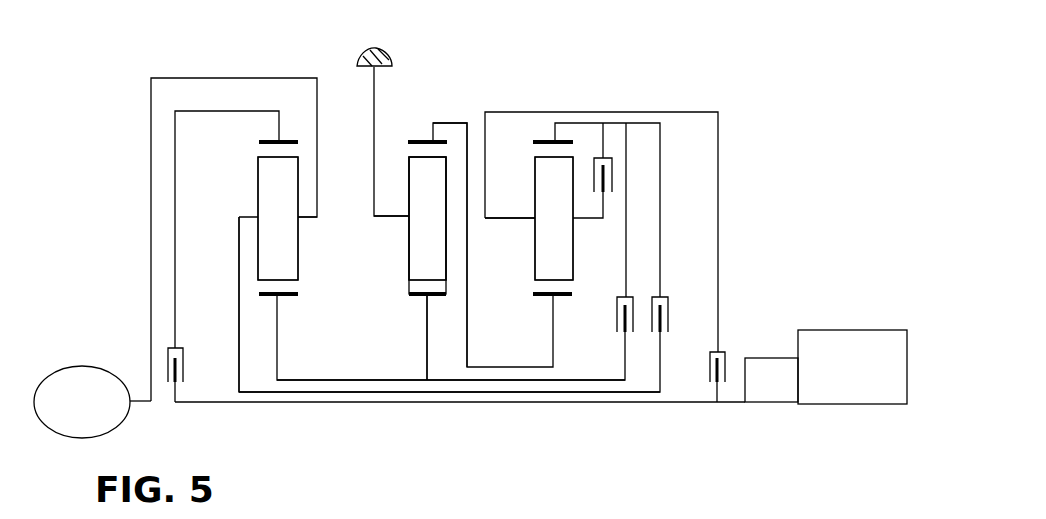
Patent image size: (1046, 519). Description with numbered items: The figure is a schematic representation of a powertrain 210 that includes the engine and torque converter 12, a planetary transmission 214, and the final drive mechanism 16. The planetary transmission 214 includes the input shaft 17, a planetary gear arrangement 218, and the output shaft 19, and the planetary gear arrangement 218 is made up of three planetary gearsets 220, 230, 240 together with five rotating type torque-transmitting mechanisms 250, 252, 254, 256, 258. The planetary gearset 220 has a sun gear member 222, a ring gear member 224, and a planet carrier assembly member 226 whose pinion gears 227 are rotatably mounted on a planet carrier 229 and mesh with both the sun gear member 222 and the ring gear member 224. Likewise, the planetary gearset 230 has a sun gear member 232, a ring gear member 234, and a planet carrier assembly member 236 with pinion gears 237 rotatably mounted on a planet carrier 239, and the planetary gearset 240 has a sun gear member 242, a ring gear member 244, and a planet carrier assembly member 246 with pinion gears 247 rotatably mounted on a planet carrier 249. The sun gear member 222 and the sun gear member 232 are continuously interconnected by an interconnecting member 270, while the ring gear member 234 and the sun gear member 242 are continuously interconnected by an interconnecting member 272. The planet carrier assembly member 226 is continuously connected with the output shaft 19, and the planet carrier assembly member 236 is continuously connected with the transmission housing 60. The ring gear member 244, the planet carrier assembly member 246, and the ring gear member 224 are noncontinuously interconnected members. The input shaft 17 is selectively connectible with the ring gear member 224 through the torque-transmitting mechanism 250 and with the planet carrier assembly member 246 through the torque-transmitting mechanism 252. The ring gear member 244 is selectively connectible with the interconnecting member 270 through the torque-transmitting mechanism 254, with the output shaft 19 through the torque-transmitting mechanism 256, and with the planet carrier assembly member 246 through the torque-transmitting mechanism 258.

The engine and torque converter 12 is at (857, 327).
The final drive mechanism 16 is at (110, 366).
The input shaft 17 is at (728, 403).
The output shaft 19 is at (142, 402).
The transmission housing 60 is at (386, 53).
The powertrain 210 is at (750, 165).
The planetary transmission 214 is at (464, 61).
The planetary gear arrangement 218 is at (355, 359).
The planetary gearset 220 is at (255, 268).
The sun gear member 222 is at (292, 297).
The ring gear member 224 is at (268, 141).
The planet carrier assembly member 226 is at (256, 158).
The pinion gears 227 is at (268, 188).
The planet carrier 229 is at (308, 217).
The planetary gearset 230 is at (396, 282).
The sun gear member 232 is at (445, 300).
The ring gear member 234 is at (414, 141).
The planet carrier assembly member 236 is at (407, 157).
The pinion gears 237 is at (412, 197).
The planet carrier 239 is at (382, 217).
The planetary gearset 240 is at (529, 289).
The sun gear member 242 is at (563, 297).
The ring gear member 244 is at (565, 141).
The planet carrier assembly member 246 is at (533, 156).
The pinion gears 247 is at (546, 190).
The planet carrier 249 is at (513, 219).
The torque-transmitting mechanism 250 is at (187, 375).
The torque-transmitting mechanism 252 is at (715, 387).
The torque-transmitting mechanism 254 is at (635, 298).
The torque-transmitting mechanism 256 is at (669, 301).
The torque-transmitting mechanism 258 is at (614, 173).
The interconnecting member 270 is at (305, 381).
The interconnecting member 272 is at (466, 122).